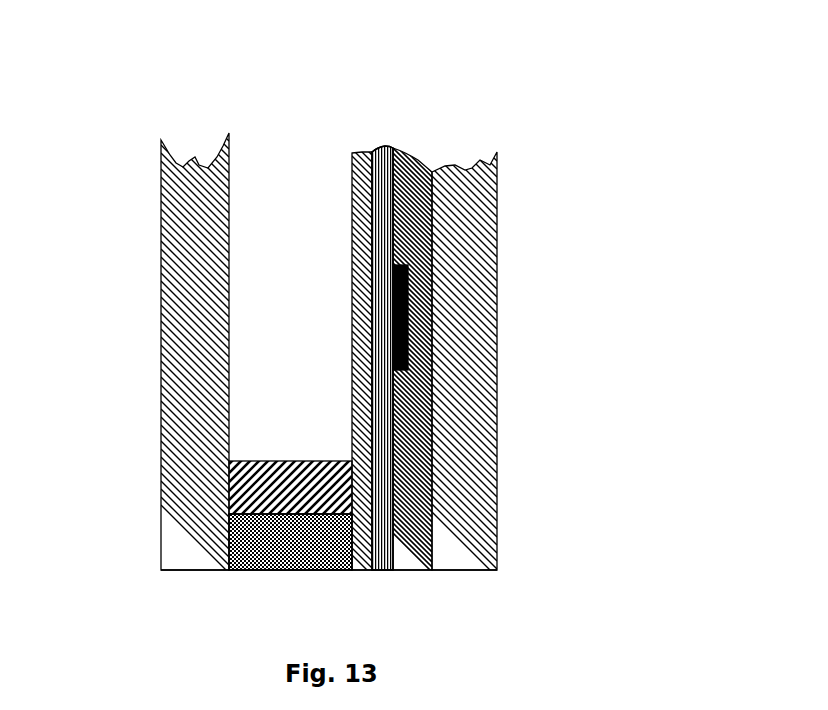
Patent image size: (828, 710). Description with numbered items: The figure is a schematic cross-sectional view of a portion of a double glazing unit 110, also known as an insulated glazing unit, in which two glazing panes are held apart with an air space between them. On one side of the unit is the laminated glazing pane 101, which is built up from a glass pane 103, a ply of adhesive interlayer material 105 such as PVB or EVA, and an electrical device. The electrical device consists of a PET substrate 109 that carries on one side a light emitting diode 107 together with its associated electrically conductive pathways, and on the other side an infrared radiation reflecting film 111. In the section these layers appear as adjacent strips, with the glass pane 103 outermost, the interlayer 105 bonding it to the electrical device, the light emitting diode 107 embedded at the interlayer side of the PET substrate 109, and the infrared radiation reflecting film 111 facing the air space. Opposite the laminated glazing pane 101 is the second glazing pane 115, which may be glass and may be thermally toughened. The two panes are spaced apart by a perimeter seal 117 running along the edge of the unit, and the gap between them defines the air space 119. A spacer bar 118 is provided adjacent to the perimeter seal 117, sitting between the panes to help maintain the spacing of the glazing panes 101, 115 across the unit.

The glazing pane 101 is at (540, 152).
The glass pane 103 is at (468, 165).
The ply of adhesive interlayer material 105 is at (412, 160).
The light emitting diode 107 is at (408, 305).
The PET substrate 109 is at (378, 148).
The double glazing unit 110 is at (560, 407).
The infrared radiation reflecting film 111 is at (353, 187).
The glazing pane 115 is at (187, 423).
The perimeter seal 117 is at (293, 570).
The spacer bar 118 is at (304, 468).
The air space 119 is at (275, 170).